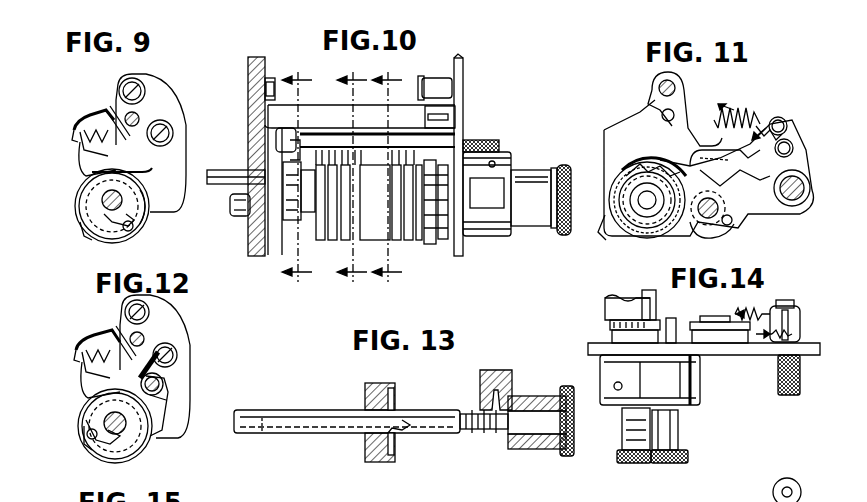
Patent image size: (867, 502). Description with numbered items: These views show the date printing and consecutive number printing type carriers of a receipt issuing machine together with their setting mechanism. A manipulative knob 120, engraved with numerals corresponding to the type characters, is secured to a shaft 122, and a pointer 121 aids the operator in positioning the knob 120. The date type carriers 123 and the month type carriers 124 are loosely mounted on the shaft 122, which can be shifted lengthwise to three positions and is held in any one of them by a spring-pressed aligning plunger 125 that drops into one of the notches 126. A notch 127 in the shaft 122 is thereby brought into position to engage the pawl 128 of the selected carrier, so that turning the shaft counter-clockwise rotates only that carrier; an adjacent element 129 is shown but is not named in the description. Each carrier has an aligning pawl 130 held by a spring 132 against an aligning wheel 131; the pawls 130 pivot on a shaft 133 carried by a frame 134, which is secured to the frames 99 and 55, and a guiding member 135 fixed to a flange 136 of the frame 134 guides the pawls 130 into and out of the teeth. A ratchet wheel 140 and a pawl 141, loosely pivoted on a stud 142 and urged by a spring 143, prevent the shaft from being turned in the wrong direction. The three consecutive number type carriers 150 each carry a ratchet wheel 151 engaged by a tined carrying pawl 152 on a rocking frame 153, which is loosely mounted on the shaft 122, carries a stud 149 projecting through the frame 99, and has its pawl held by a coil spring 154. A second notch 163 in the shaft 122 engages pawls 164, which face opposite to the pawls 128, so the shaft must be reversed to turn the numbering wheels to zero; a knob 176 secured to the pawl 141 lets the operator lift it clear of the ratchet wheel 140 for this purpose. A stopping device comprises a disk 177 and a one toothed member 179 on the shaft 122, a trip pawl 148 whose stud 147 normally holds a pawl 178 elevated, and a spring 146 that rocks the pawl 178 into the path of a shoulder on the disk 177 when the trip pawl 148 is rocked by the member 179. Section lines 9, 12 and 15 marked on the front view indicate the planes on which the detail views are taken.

In FIG. 10, the section line 9 is at (387, 178).
In FIG. 10, the section line 12 is at (352, 178).
In FIG. 10, the section line 15 is at (297, 178).
In FIG. 10, the frame 55 is at (463, 64).
In FIG. 10, the frame 99 is at (256, 57).
In FIG. 10, the manipulative knob 120 is at (545, 170).
In FIG. 13, the manipulative knob 120 is at (540, 396).
In FIG. 14, the manipulative knob 120 is at (668, 463).
In FIG. 10, the pointer 121 is at (528, 166).
In FIG. 14, the pointer 121 is at (634, 463).
In FIG. 9, the shaft 122 is at (120, 198).
In FIG. 12, the shaft 122 is at (120, 436).
In FIG. 13, the shaft 122 is at (320, 410).
In FIG. 10, the date type carriers 123 is at (410, 242).
In FIG. 10, the month type carriers 124 is at (376, 240).
In FIG. 13, the month type carriers 124 is at (386, 383).
In FIG. 13, the spring-pressed aligning plunger 125 is at (508, 384).
In FIG. 13, the notches 126 is at (494, 430).
In FIG. 9, the notch 127 is at (102, 200).
In FIG. 13, the notch 127 is at (404, 432).
In FIG. 9, the pawl 128 is at (80, 232).
In FIG. 9, the detent 129 is at (146, 204).
In FIG. 9, the aligning pawl 130 is at (78, 156).
In FIG. 12, the aligning pawl 130 is at (80, 382).
In FIG. 9, the aligning wheel 131 is at (148, 170).
In FIG. 9, the spring 132 is at (98, 112).
In FIG. 12, the spring 132 is at (96, 333).
In FIG. 9, the shaft 133 is at (136, 116).
In FIG. 12, the shaft 133 is at (142, 334).
In FIG. 9, the frame 134 is at (180, 100).
In FIG. 10, the frame 134 is at (272, 78).
In FIG. 12, the frame 134 is at (184, 322).
In FIG. 9, the guiding member 135 is at (112, 96).
In FIG. 12, the guiding member 135 is at (118, 318).
In FIG. 9, the flange 136 is at (72, 126).
In FIG. 10, the flange 136 is at (368, 112).
In FIG. 11, the ratchet wheel 140 is at (618, 168).
In FIG. 14, the ratchet wheel 140 is at (612, 338).
In FIG. 11, the pawl 141 is at (770, 196).
In FIG. 11, the stud 142 is at (798, 200).
In FIG. 11, the spring 143 is at (752, 108).
In FIG. 11, the spring 146 is at (752, 138).
In FIG. 11, the stud 147 is at (706, 164).
In FIG. 11, the trip pawl 148 is at (708, 220).
In FIG. 10, the stud 149 is at (220, 170).
In FIG. 10, the consecutive number type carriers 150 is at (336, 240).
In FIG. 12, the ratchet wheel 151 is at (134, 454).
In FIG. 12, the tined carrying pawl 152 is at (166, 406).
In FIG. 10, the rocking frame 153 is at (296, 222).
In FIG. 12, the rocking frame 153 is at (156, 360).
In FIG. 12, the coil spring 154 is at (162, 386).
In FIG. 12, the notch 163 is at (118, 406).
In FIG. 13, the notch 163 is at (262, 432).
In FIG. 12, the pawls 164 is at (88, 446).
In FIG. 11, the knob 176 is at (790, 126).
In FIG. 14, the knob 176 is at (778, 370).
In FIG. 11, the disk 177 is at (636, 166).
In FIG. 14, the disk 177 is at (606, 314).
In FIG. 11, the pawl 178 is at (700, 124).
In FIG. 14, the pawl 178 is at (728, 320).
In FIG. 11, the one toothed member 179 is at (622, 232).